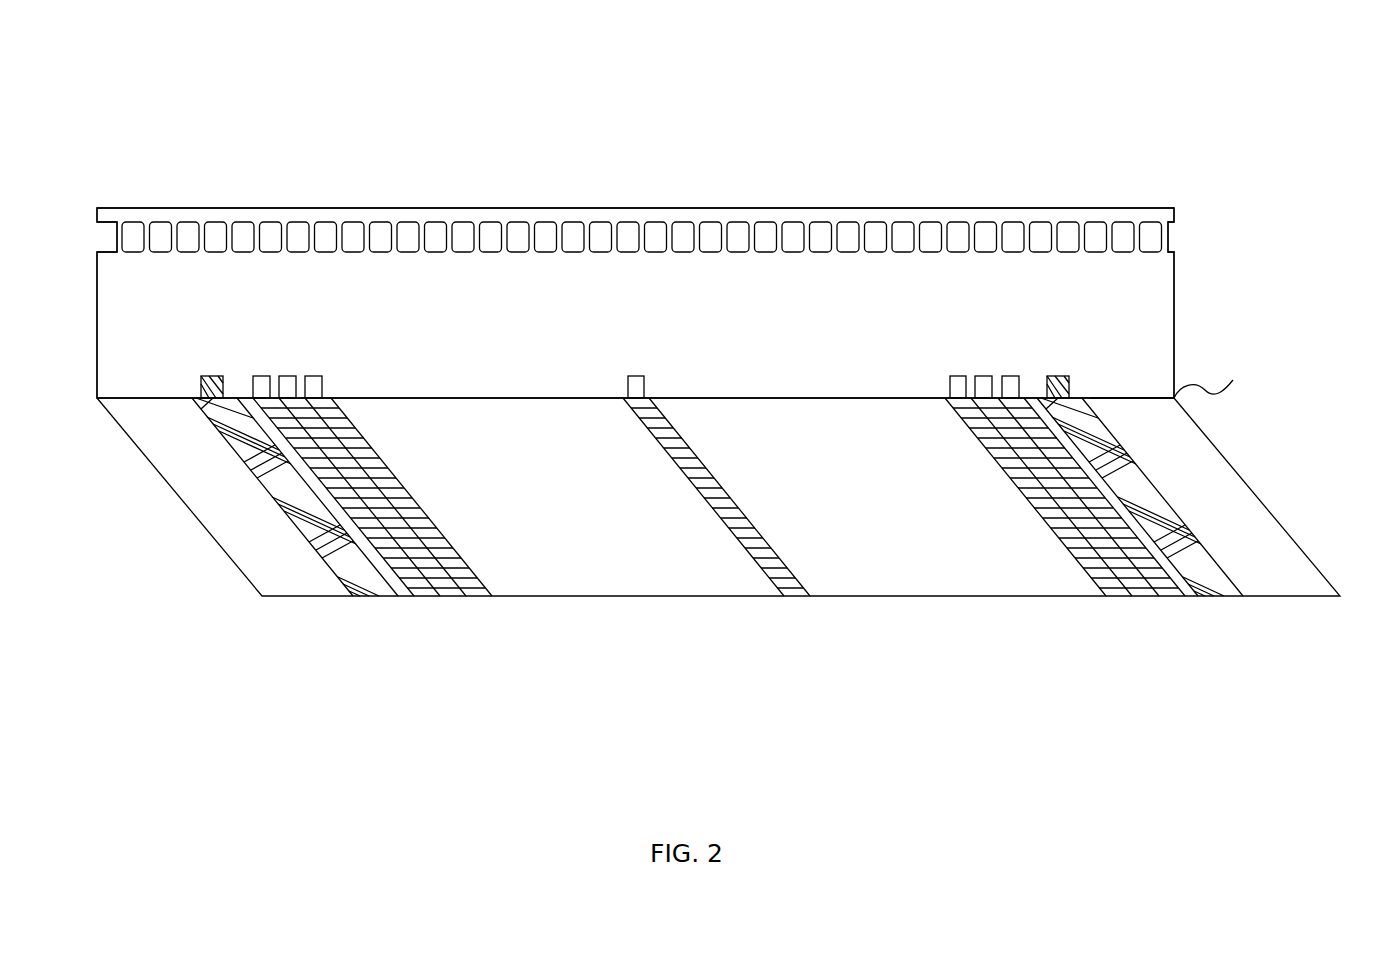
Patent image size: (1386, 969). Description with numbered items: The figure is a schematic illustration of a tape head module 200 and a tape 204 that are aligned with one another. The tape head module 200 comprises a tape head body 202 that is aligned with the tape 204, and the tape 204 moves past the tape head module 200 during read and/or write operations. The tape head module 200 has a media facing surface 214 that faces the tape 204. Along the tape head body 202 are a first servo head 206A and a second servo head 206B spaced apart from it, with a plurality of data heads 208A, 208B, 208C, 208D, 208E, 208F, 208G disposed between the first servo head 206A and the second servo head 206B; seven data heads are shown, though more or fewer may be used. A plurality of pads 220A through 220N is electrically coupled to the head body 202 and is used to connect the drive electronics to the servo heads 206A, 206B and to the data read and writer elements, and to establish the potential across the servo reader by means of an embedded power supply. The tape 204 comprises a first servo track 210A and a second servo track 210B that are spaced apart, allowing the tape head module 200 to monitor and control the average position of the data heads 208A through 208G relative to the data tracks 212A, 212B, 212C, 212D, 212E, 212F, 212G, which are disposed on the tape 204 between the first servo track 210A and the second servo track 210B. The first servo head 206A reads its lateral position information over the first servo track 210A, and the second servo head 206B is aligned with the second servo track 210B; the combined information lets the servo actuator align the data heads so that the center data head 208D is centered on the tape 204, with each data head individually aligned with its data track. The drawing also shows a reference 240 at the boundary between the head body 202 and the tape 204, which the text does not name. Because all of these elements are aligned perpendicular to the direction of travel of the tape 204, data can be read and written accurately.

The tape head module 200 is at (207, 56).
The tape head body 202 is at (1176, 290).
The tape 204 is at (1262, 500).
The first servo head 206A is at (213, 375).
The second servo head 206B is at (1058, 375).
The data head 208A is at (262, 375).
The data head 208B is at (287, 375).
The data head 208C is at (313, 375).
The data head 208D is at (634, 375).
The data head 208E is at (957, 375).
The data head 208F is at (983, 375).
The data head 208G is at (1010, 375).
The first servo track 210A is at (378, 598).
The second servo track 210B is at (1222, 598).
The data track 212A is at (430, 598).
The data track 212B is at (456, 598).
The data track 212C is at (486, 598).
The data track 212D is at (800, 598).
The data track 212E is at (1127, 598).
The data track 212F is at (1152, 598).
The data track 212G is at (1178, 598).
The media facing surface 214 is at (1125, 397).
The pad 220A is at (187, 222).
The pad 220N is at (1097, 222).
The interface between board and substrate 240 is at (1227, 381).